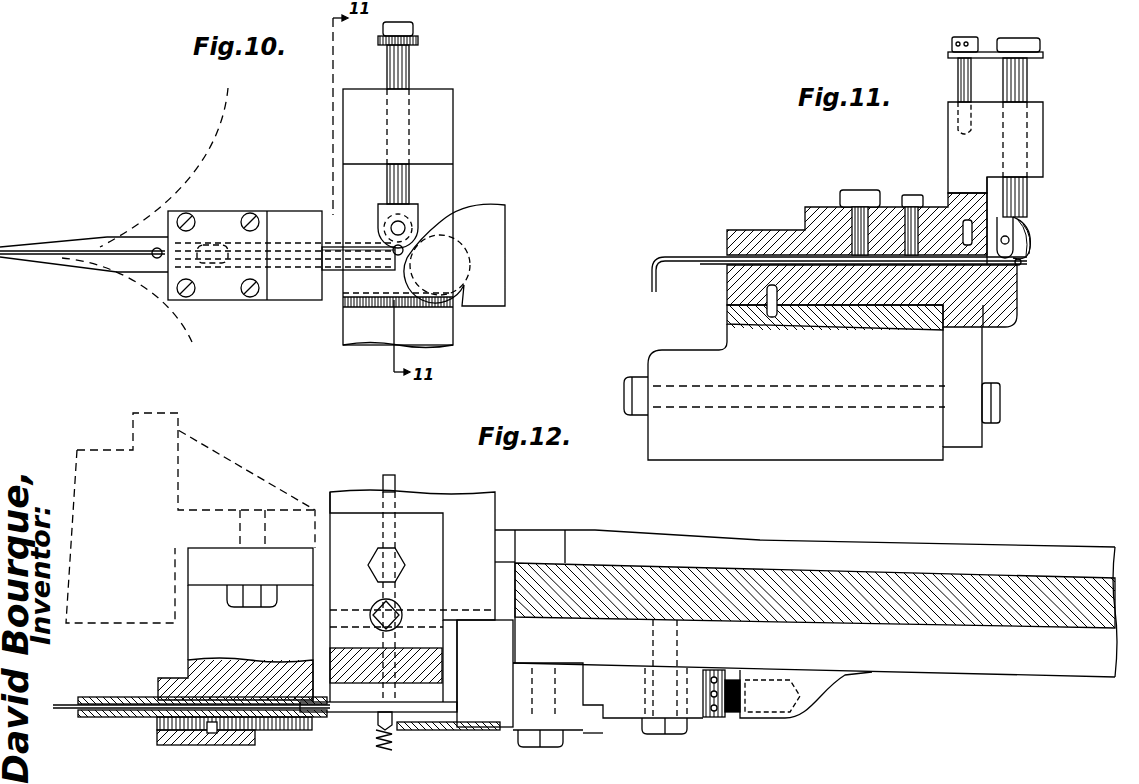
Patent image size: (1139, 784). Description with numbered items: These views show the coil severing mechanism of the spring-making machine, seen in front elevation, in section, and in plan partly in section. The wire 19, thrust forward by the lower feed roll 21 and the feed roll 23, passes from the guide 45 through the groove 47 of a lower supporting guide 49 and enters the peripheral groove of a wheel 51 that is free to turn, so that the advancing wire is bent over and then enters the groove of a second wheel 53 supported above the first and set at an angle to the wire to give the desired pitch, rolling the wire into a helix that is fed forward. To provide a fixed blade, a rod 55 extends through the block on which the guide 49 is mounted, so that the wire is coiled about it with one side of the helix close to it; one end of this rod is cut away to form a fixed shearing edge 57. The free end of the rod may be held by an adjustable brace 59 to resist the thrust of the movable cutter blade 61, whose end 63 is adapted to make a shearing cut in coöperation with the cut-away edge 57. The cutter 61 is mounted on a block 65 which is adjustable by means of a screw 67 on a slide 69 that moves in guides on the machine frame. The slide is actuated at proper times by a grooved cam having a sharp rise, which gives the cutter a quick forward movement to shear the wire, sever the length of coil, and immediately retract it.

In FIG. 10, the wire 19 is at (50, 249).
In FIG. 11, the wire 19 is at (1030, 268).
In FIG. 12, the wire 19 is at (66, 704).
In FIG. 10, the lower feed roll 21 is at (180, 330).
In FIG. 10, the feed roll 23 is at (197, 170).
In FIG. 10, the guide 45 is at (140, 276).
In FIG. 12, the guide 45 is at (125, 717).
In FIG. 11, the groove 47 is at (1020, 288).
In FIG. 10, the lower supporting guide 49 is at (357, 285).
In FIG. 11, the lower supporting guide 49 is at (1012, 322).
In FIG. 12, the lower supporting guide 49 is at (357, 735).
In FIG. 12, the wheel 51 is at (450, 730).
In FIG. 10, the wheel 53 is at (413, 223).
In FIG. 11, the wheel 53 is at (1025, 235).
In FIG. 11, the rod 55 is at (700, 256).
In FIG. 12, the rod 55 is at (397, 487).
In FIG. 10, the cut-away shearing edge 57 is at (402, 268).
In FIG. 11, the cut-away shearing edge 57 is at (1022, 266).
In FIG. 12, the cut-away shearing edge 57 is at (394, 735).
In FIG. 10, the adjustable brace 59 is at (340, 254).
In FIG. 12, the adjustable brace 59 is at (320, 730).
In FIG. 10, the movable cutter blade 61 is at (483, 295).
In FIG. 12, the movable cutter blade 61 is at (486, 730).
In FIG. 10, the cutter end 63 is at (440, 238).
In FIG. 12, the block 65 is at (626, 712).
In FIG. 12, the screw 67 is at (714, 722).
In FIG. 12, the slide 69 is at (870, 665).